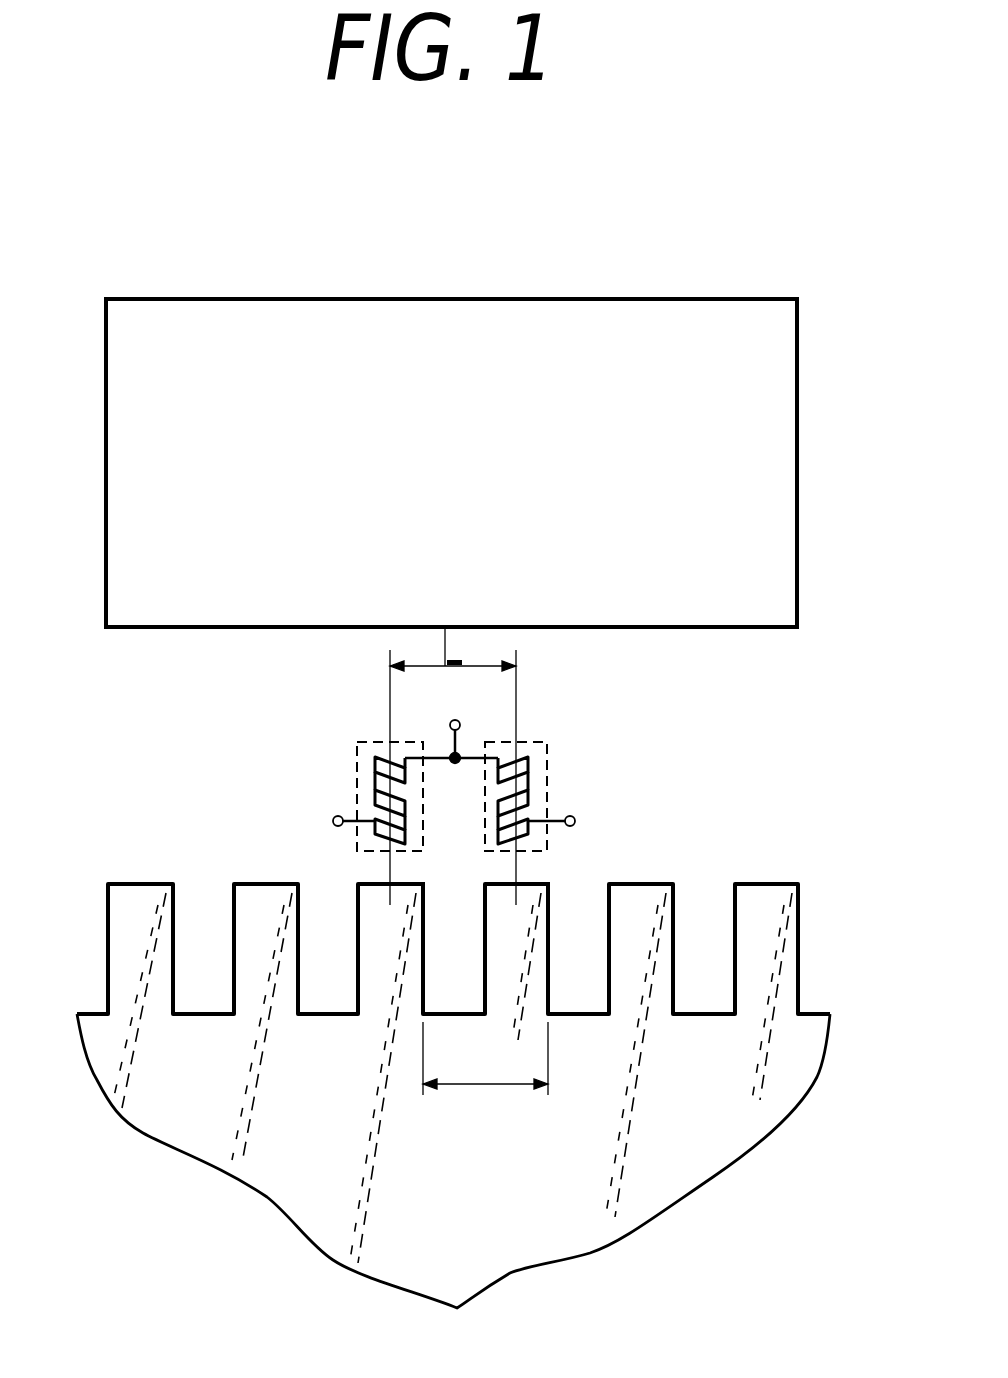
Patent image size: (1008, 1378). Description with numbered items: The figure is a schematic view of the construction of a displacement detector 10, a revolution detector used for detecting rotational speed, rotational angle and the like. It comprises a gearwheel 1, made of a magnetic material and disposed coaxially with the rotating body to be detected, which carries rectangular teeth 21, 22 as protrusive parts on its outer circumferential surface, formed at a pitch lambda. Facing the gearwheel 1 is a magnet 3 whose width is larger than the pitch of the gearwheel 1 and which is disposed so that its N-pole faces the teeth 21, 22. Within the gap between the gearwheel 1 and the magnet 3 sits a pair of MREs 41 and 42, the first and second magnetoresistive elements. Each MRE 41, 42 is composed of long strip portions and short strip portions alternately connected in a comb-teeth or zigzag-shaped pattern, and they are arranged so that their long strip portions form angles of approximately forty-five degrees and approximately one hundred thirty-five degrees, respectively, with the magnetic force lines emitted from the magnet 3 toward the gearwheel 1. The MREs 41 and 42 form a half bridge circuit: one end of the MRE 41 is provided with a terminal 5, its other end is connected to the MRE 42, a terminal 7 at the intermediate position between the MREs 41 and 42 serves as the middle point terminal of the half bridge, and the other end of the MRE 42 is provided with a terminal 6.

The gearwheel 1 is at (453, 1061).
The magnet 3 is at (783, 467).
The terminal 5 is at (573, 817).
The terminal 6 is at (335, 817).
The terminal 7 is at (455, 718).
The displacement detector 10 is at (818, 310).
The tooth 21 is at (538, 893).
The tooth 22 is at (362, 890).
The MRE 41 is at (547, 748).
The MRE 42 is at (357, 753).